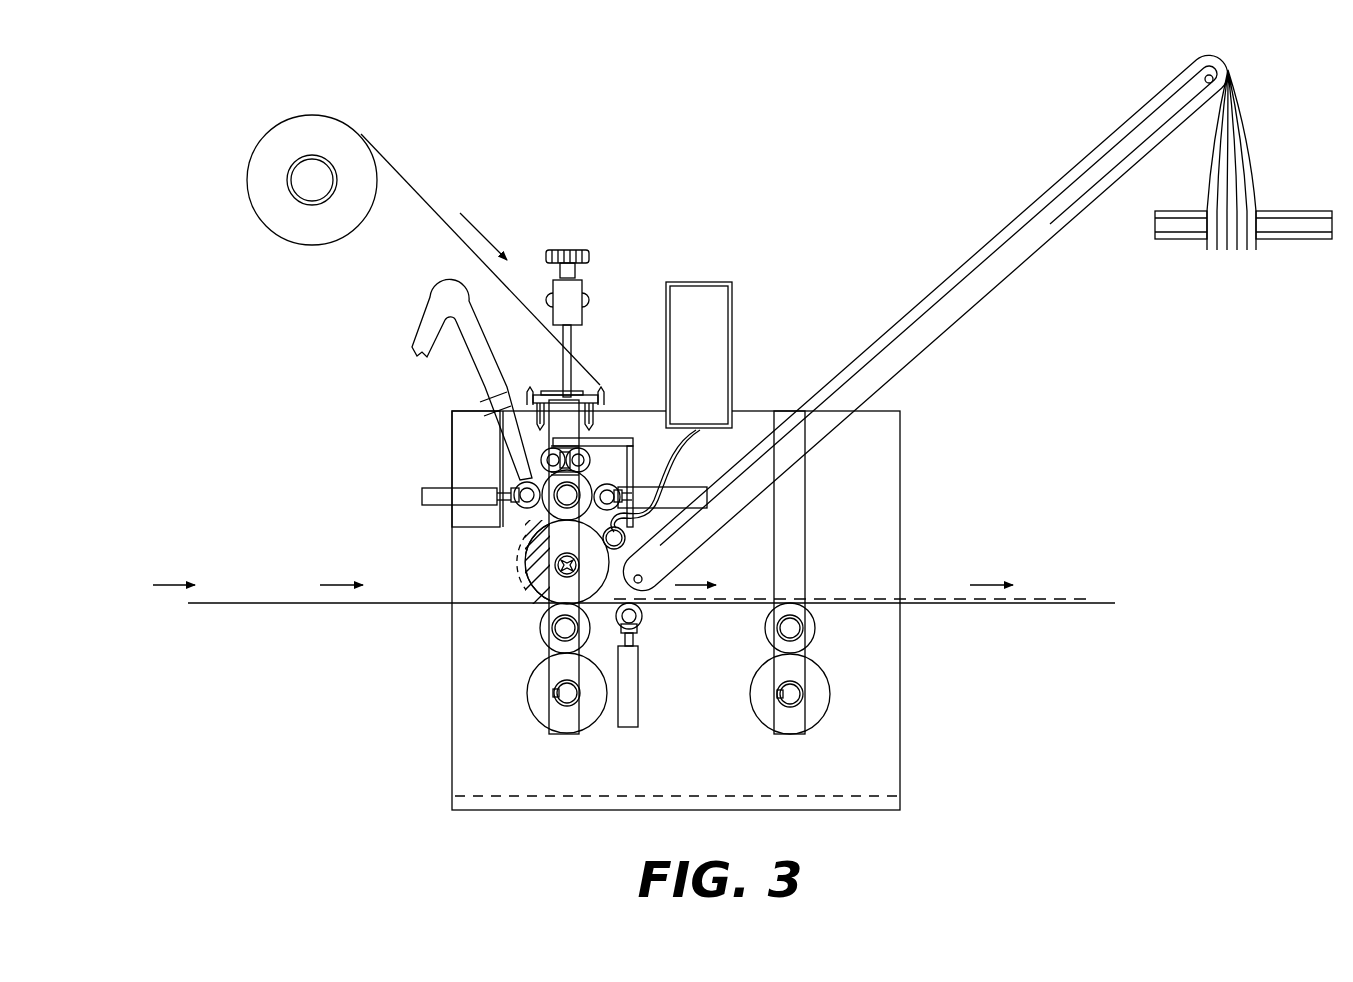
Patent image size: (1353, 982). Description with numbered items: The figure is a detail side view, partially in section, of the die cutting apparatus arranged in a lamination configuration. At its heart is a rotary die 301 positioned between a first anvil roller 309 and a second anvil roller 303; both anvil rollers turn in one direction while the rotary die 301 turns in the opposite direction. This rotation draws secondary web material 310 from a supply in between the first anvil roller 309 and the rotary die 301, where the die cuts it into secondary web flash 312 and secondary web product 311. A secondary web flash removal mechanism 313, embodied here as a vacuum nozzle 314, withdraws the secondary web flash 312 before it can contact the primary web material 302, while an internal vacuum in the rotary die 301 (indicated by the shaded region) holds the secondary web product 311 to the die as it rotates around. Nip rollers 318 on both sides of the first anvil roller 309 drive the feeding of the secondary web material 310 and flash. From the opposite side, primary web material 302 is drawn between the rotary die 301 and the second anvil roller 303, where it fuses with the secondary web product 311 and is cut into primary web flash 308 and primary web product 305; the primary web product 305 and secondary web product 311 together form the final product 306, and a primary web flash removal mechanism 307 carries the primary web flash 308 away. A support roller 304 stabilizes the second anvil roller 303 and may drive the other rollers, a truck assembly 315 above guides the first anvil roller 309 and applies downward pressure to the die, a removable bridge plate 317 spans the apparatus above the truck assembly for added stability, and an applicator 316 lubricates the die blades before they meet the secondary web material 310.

The rotary die 301 is at (597, 577).
The primary web material 302 is at (208, 605).
The second anvil roller 303 is at (536, 632).
The support roller 304 is at (525, 702).
The primary web product 305 is at (606, 605).
The final product 306 is at (1085, 605).
The primary web flash removal mechanism 307 is at (1047, 243).
The primary web flash 308 is at (929, 295).
The first anvil roller 309 is at (545, 519).
The secondary web material 310 is at (398, 172).
The secondary web product 311 is at (518, 552).
The secondary web flash 312 is at (517, 486).
The secondary web flash removal mechanism 313 is at (420, 307).
The vacuum nozzle 314 is at (514, 457).
The truck assembly 315 is at (600, 393).
The applicator 316 is at (718, 281).
The removable bridge plate 317 is at (528, 425).
The nip rollers 318 is at (514, 486).